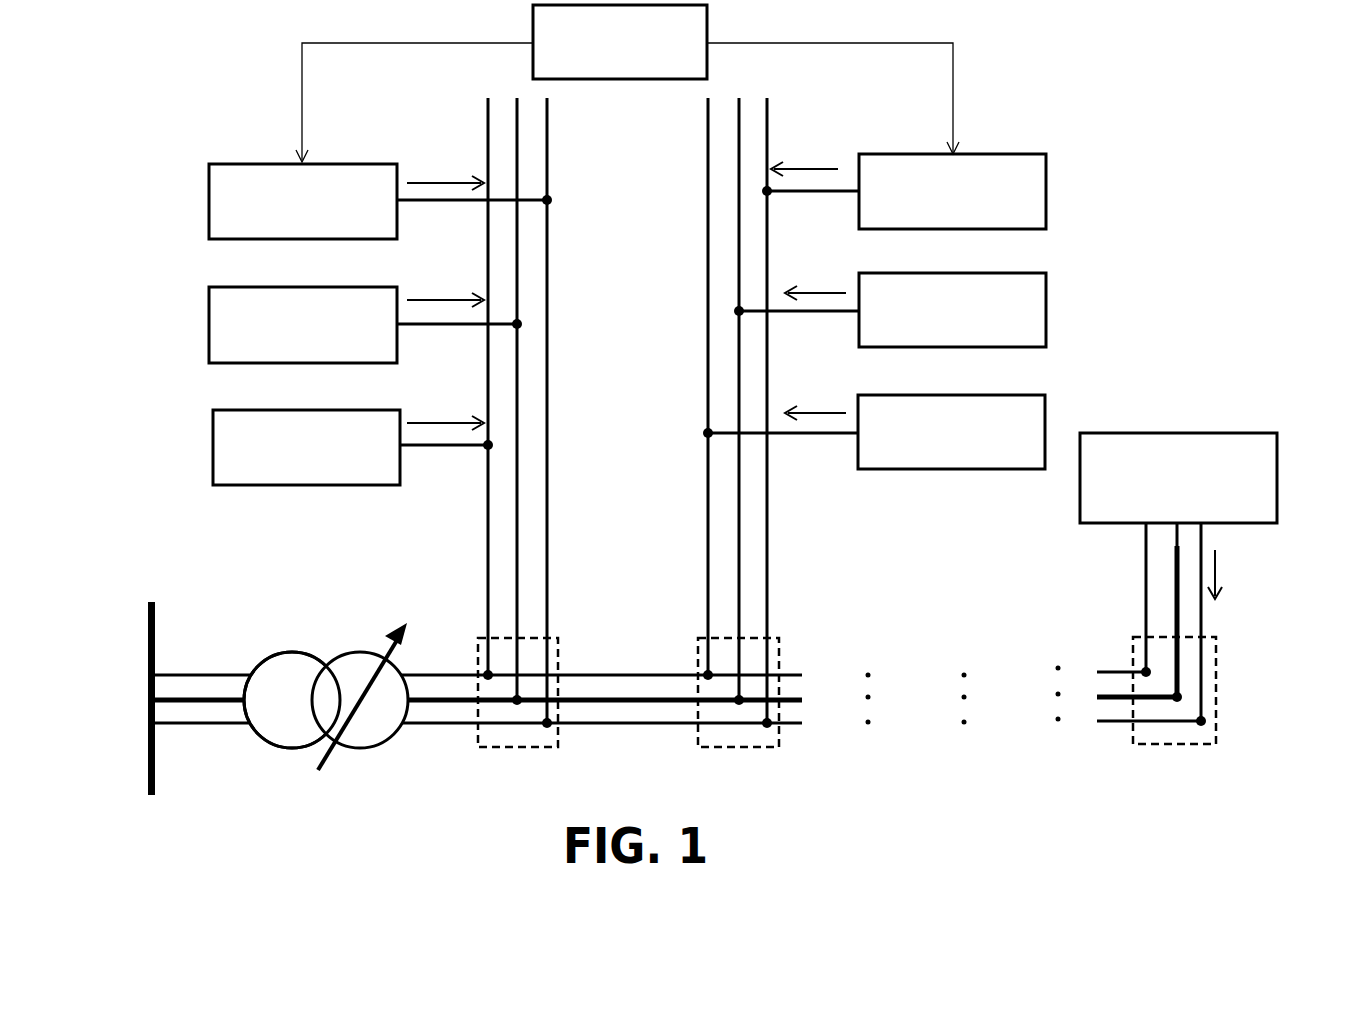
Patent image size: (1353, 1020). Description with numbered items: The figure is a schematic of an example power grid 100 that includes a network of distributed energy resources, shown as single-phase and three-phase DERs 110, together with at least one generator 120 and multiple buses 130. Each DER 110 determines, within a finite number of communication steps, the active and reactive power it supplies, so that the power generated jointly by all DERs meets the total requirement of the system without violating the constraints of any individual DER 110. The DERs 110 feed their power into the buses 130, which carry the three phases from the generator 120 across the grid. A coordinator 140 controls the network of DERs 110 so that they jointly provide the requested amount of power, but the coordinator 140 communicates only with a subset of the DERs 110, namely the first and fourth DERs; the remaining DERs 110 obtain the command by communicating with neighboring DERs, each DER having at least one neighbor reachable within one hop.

The power grid 100 is at (1162, 210).
The distributed energy resource (DER) 110 is at (209, 187).
The generator 120 is at (287, 650).
The bus 130 is at (558, 648).
The coordinator 140 is at (612, 81).